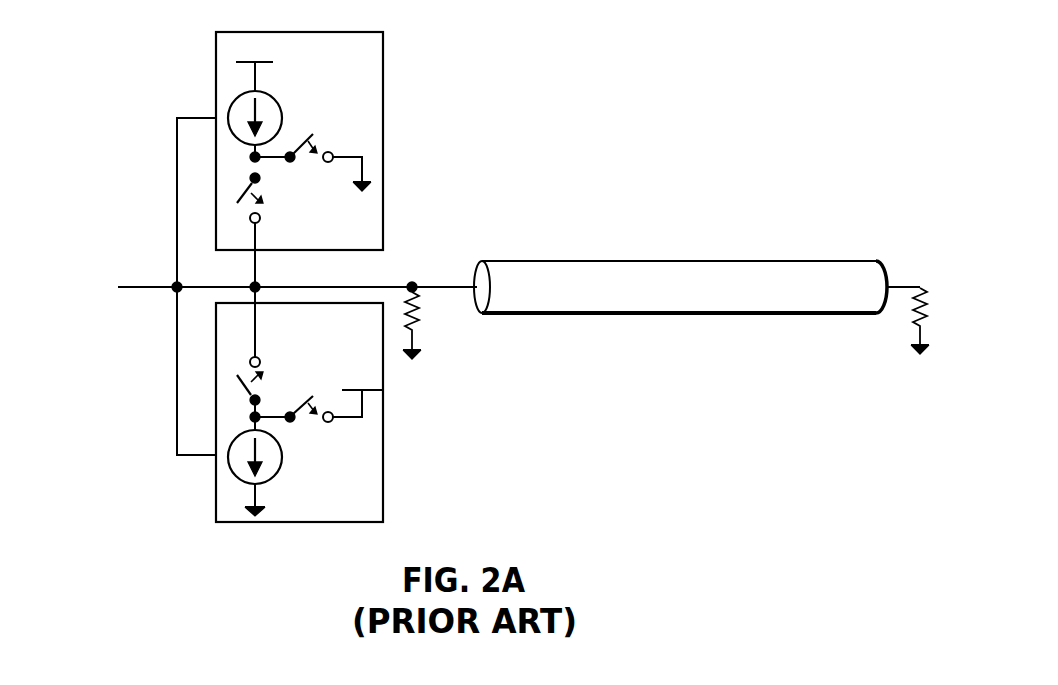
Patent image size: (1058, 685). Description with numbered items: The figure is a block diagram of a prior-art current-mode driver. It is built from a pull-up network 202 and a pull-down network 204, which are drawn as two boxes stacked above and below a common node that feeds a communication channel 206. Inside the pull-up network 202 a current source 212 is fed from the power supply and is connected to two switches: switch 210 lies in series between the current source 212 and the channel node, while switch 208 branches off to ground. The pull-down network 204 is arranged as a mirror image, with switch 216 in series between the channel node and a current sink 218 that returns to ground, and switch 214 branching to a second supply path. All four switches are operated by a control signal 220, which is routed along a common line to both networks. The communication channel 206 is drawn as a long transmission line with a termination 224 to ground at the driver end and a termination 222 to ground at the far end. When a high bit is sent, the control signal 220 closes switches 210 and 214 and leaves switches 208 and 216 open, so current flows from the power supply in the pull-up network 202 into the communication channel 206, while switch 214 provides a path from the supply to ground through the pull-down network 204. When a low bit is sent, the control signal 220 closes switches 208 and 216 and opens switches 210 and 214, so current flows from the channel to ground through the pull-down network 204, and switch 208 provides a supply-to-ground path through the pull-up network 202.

The pull-up network 202 is at (299, 141).
The pull-down network 204 is at (299, 412).
The communication channel 206 is at (680, 287).
The switch 208 is at (312, 135).
The switch 210 is at (240, 185).
The current source 212 is at (240, 90).
The switch 214 is at (312, 391).
The switch 216 is at (238, 393).
The current sink 218 is at (283, 466).
The control signal 220 is at (217, 286).
The termination 222 is at (903, 310).
The termination 224 is at (430, 308).